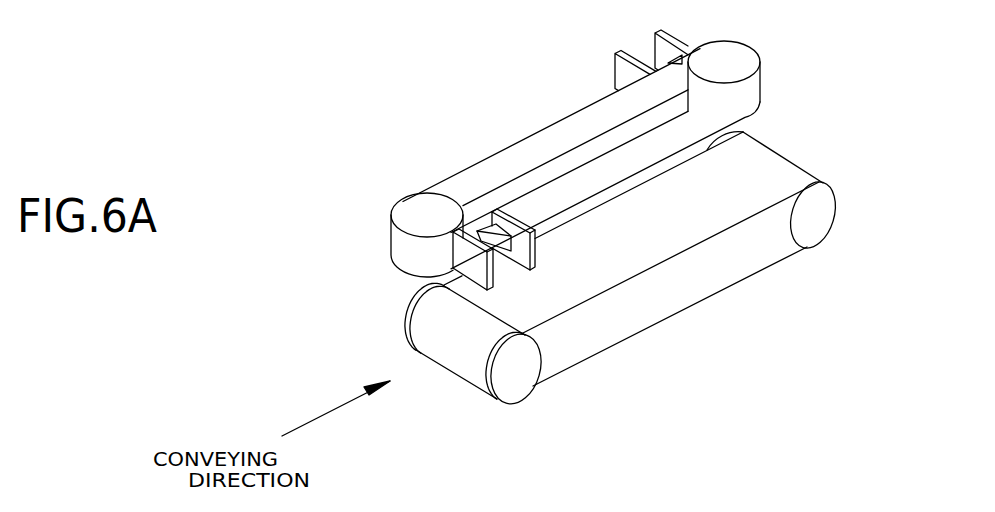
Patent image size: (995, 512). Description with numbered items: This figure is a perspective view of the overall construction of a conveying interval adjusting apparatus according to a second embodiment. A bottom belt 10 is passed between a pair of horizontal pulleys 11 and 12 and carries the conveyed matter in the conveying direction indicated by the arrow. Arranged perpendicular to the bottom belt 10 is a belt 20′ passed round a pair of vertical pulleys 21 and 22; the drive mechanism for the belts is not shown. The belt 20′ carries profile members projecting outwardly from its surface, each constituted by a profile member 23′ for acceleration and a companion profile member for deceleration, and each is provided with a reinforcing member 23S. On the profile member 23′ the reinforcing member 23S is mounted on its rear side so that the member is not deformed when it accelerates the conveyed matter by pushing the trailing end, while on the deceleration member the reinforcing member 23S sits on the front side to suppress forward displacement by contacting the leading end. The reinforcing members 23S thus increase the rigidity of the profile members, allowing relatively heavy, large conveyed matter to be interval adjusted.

The bottom belt 10 is at (665, 248).
The horizontal pulley 11 is at (517, 378).
The horizontal pulley 12 is at (812, 233).
The belt with profile members 20′ is at (580, 117).
The vertical pulley 21 is at (408, 218).
The vertical pulley 22 is at (748, 53).
The profile member for acceleration 23′ is at (517, 216).
The reinforcing member 23S is at (478, 232).